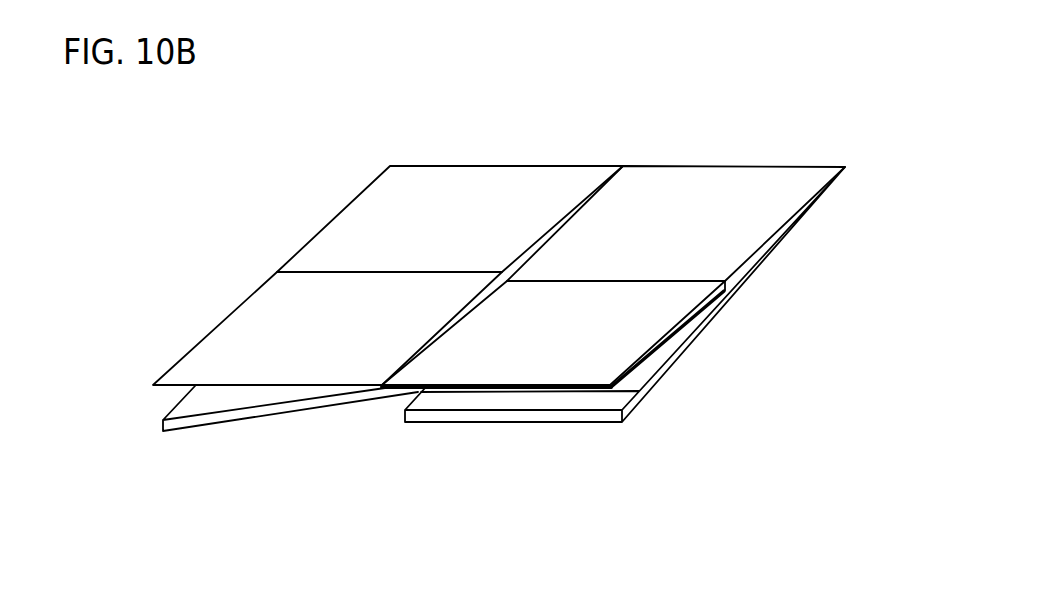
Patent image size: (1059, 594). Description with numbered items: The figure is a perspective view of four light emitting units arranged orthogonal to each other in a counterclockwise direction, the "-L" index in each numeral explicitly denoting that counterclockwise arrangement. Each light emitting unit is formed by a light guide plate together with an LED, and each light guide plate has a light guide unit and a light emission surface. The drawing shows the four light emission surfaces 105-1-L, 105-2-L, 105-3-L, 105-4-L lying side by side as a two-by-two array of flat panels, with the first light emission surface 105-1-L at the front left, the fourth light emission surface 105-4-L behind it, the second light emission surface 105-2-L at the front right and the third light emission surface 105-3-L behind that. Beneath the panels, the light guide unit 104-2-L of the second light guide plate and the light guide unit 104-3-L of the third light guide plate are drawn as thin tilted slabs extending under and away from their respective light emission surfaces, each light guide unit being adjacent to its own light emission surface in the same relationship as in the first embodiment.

The light emission surface 105-1-L is at (275, 303).
The light emission surface 105-2-L is at (608, 333).
The light emission surface 105-3-L is at (758, 184).
The light emission surface 105-4-L is at (375, 200).
The light guide unit 104-2-L is at (247, 399).
The light guide unit 104-3-L is at (497, 398).